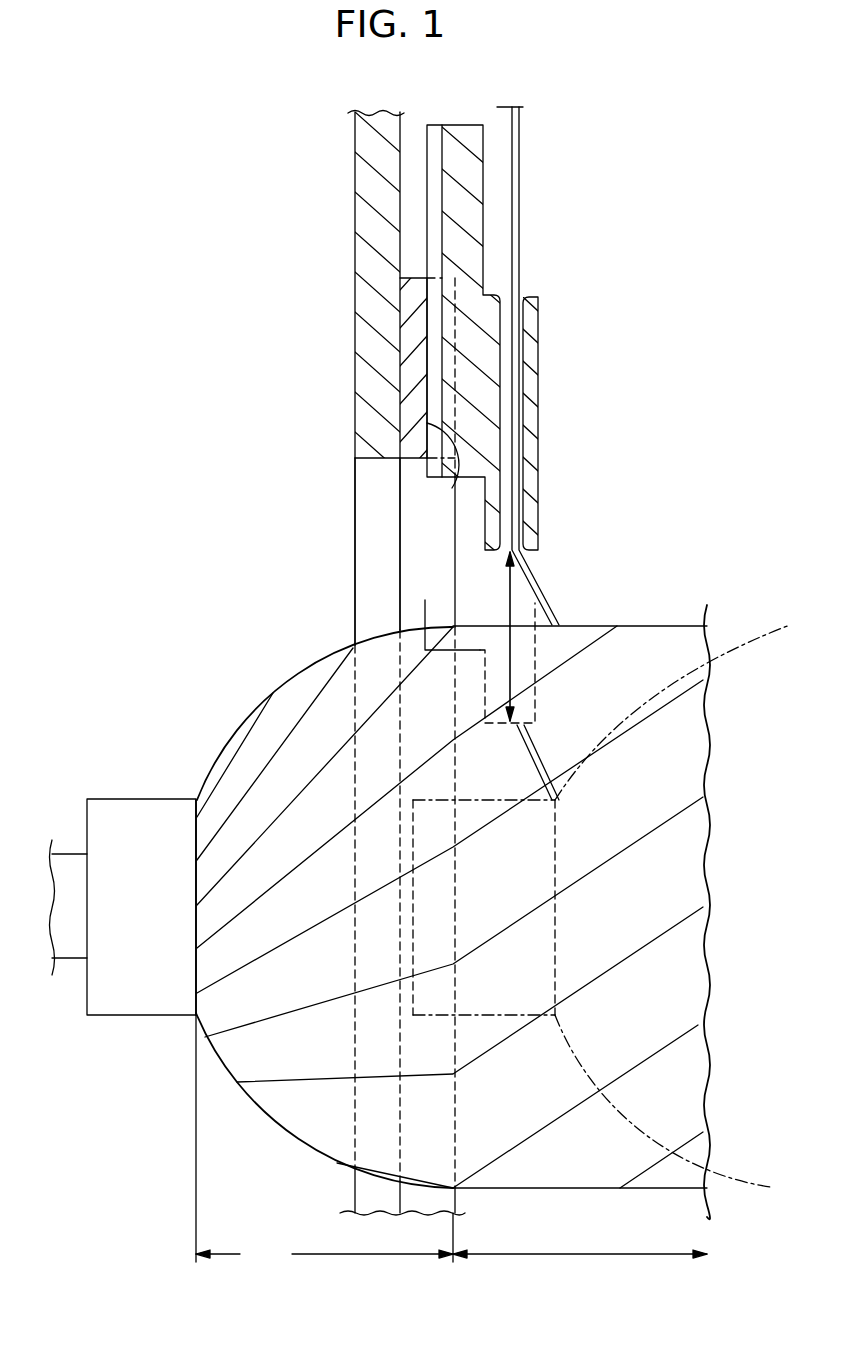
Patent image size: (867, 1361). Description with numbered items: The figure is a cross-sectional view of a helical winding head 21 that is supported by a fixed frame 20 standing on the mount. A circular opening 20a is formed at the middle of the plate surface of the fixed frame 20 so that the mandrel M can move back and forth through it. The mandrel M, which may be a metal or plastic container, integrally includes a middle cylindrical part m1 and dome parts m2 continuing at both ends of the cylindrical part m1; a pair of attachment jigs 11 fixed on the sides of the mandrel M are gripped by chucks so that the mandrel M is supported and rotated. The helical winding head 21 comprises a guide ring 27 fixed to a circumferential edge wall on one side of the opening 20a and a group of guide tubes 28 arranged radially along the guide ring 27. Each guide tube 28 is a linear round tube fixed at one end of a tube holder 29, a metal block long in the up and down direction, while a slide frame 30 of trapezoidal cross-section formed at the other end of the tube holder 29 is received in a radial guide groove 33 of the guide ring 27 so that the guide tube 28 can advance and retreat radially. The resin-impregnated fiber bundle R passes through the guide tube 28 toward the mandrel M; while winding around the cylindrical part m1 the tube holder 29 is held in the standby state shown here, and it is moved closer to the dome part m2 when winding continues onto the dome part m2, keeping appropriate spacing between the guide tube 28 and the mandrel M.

The attachment jig 11 is at (68, 848).
The fixed frame 20 is at (355, 189).
The circular opening 20a is at (373, 458).
The helical winding head 21 is at (577, 258).
The guide ring 27 is at (407, 332).
The guide tube 28 is at (540, 417).
The tube holder 29 is at (483, 222).
The slide frame 30 is at (432, 226).
The radial guide groove 33 is at (452, 488).
The fiber bundle R is at (550, 592).
The mandrel M is at (660, 626).
The cylindrical part m1 is at (592, 1254).
The dome part m2 is at (318, 1254).